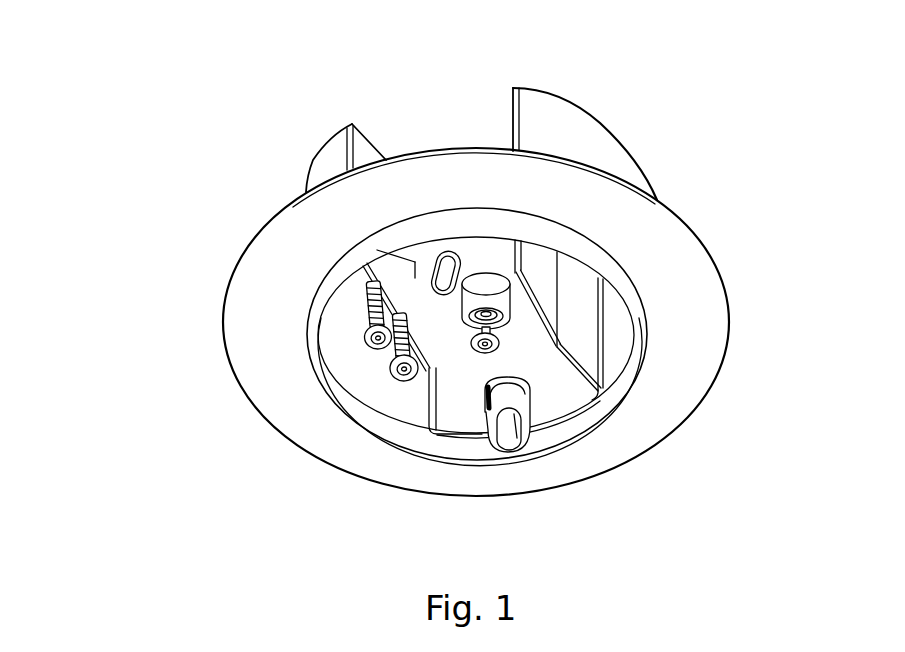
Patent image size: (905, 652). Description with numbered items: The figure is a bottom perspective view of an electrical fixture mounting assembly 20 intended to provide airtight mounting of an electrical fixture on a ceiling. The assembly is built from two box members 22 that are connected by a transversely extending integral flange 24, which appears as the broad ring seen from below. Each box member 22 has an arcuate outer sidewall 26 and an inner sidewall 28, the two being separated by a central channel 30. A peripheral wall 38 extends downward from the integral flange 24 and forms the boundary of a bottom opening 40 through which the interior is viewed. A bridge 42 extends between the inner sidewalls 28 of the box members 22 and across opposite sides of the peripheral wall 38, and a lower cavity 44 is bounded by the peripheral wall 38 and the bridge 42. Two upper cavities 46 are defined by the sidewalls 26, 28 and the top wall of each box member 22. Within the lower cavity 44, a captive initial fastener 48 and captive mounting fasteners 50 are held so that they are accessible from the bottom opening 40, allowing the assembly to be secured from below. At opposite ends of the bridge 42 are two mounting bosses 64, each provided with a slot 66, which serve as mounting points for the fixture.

The electrical fixture mounting assembly 20 is at (190, 181).
The box members 22 is at (491, 103).
The integral flange 24 is at (488, 190).
The arcuate outer sidewall 26 is at (577, 139).
The inner sidewall 28 is at (364, 146).
The central channel 30 is at (452, 128).
The peripheral wall 38 is at (532, 229).
The bottom opening 40 is at (398, 431).
The bridge 42 is at (477, 383).
The lower cavity 44 is at (563, 400).
The upper cavities 46 is at (348, 301).
The captive initial fastener 48 is at (494, 350).
The captive mounting fasteners 50 is at (366, 334).
The mounting bosses 64 is at (528, 462).
The slots 66 is at (517, 430).